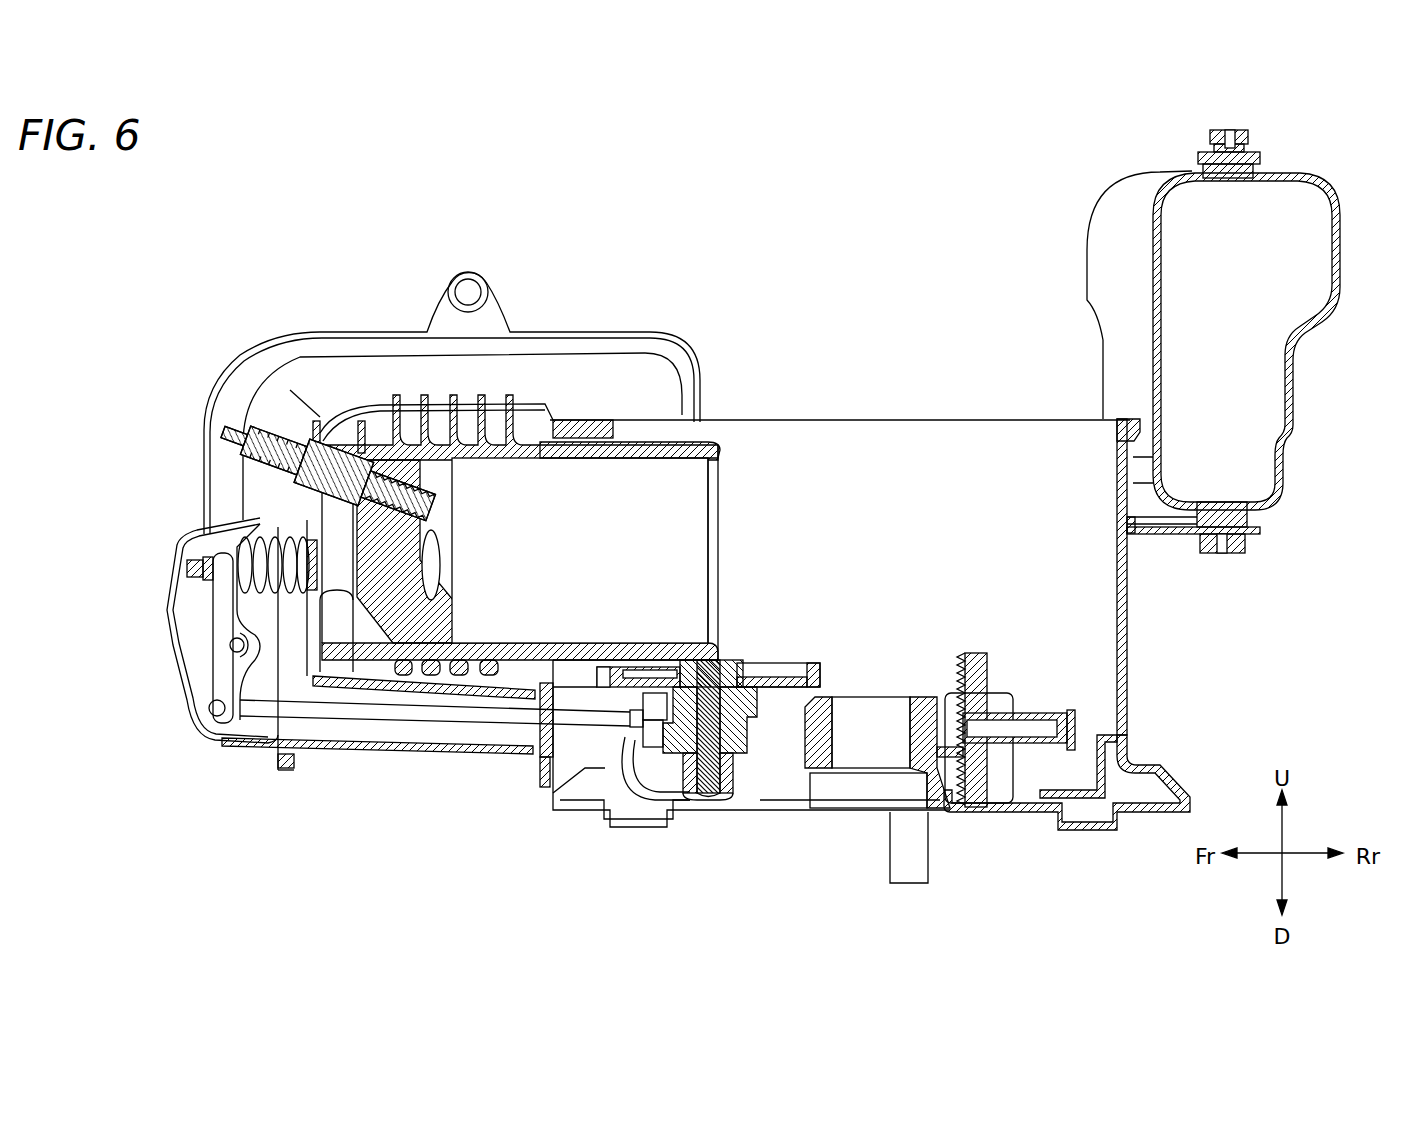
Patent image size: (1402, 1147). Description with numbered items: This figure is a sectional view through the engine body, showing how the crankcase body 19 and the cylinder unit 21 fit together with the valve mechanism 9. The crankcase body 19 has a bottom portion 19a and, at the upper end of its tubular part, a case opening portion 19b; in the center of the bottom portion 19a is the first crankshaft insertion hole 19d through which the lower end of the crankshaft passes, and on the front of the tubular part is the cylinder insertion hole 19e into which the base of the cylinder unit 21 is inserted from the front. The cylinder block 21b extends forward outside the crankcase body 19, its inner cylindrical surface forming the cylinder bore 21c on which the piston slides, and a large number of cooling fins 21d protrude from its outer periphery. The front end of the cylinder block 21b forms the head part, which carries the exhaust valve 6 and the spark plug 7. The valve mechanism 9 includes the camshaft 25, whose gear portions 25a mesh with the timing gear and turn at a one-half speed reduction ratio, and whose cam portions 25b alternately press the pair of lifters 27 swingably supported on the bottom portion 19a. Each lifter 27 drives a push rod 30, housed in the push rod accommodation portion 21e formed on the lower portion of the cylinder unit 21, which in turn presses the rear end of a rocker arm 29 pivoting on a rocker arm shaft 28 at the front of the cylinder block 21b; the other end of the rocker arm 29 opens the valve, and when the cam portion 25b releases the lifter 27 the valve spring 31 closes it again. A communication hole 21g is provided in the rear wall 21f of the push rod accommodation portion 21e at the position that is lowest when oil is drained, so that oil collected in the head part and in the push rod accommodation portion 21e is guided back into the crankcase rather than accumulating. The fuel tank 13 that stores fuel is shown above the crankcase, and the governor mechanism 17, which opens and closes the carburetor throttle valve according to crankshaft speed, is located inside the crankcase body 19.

The exhaust valve 6 is at (433, 565).
The spark plug 7 is at (243, 517).
The valve mechanism 9 is at (318, 728).
The fuel tank 13 is at (1296, 394).
The governor mechanism 17 is at (1023, 697).
The crankcase body 19 is at (1126, 604).
The bottom portion 19a is at (760, 800).
The case opening portion 19b is at (1118, 437).
The first crankshaft insertion hole 19d is at (910, 733).
The cylinder insertion hole 19e is at (598, 462).
The cylinder unit 21 is at (640, 437).
The cylinder block 21b is at (382, 578).
The cylinder bore 21c is at (677, 478).
The cooling fins 21d is at (453, 393).
The push rod accommodation portion 21e is at (373, 745).
The rear wall 21f is at (510, 745).
The communication hole 21g is at (538, 790).
The camshaft 25 is at (745, 664).
The gear portions 25a is at (810, 665).
The cam portions 25b is at (777, 707).
The lifters 27 is at (630, 697).
The rocker arm shafts 28 is at (230, 648).
The rocker arms 29 is at (213, 576).
The push rods 30 is at (437, 750).
The valve springs 31 is at (252, 584).